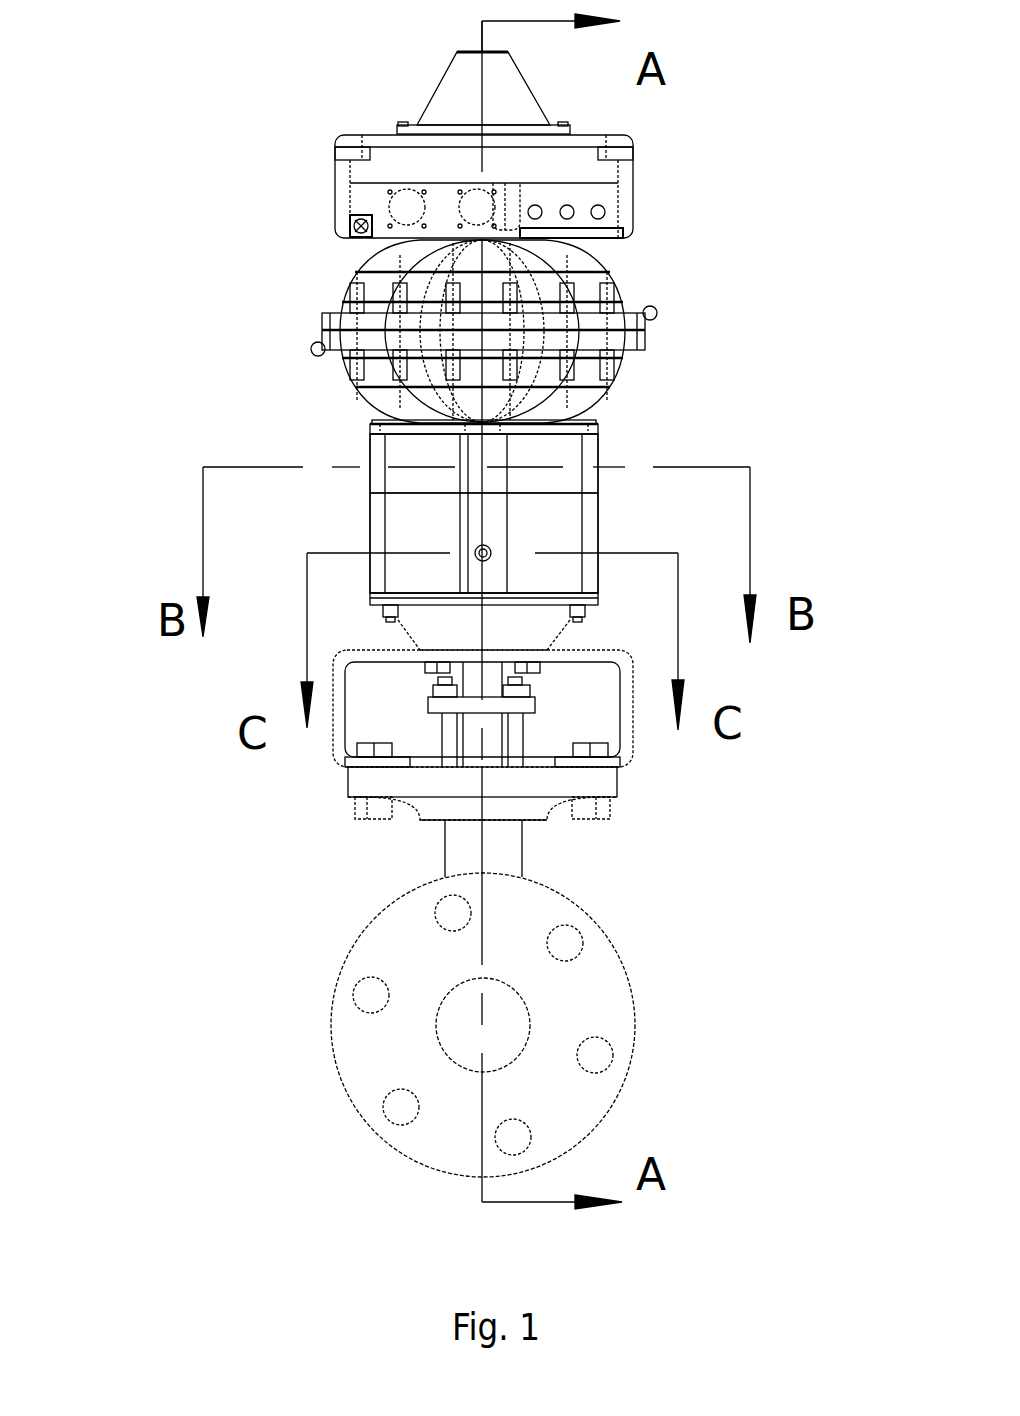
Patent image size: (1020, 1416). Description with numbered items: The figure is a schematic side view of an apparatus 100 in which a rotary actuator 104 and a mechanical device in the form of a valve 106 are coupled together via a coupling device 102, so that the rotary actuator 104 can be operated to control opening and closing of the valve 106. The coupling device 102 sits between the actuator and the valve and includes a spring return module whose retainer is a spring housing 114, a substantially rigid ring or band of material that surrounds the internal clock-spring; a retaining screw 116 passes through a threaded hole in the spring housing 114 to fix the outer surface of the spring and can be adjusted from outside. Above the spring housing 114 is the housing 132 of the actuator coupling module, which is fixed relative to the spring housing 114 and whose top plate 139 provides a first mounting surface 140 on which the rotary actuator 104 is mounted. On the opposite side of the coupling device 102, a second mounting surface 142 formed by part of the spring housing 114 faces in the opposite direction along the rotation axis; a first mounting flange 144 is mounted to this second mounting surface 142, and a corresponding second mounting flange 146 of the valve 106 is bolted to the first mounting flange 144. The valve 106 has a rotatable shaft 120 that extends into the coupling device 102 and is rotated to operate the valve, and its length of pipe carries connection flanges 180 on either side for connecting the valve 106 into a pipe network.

The apparatus 100 is at (188, 126).
The coupling device 102 is at (622, 436).
The rotary actuator 104 is at (655, 294).
The valve 106 is at (612, 905).
The spring housing 114 is at (598, 543).
The retaining screw 116 is at (476, 550).
The rotatable shaft 120 is at (503, 745).
The housing 132 is at (598, 478).
The top plate 139 is at (370, 428).
The first mounting surface 140 is at (373, 420).
The second mounting surface 142 is at (585, 608).
The first mounting flange 144 is at (400, 630).
The second mounting flange 146 is at (337, 723).
The connection flanges 180 is at (638, 998).